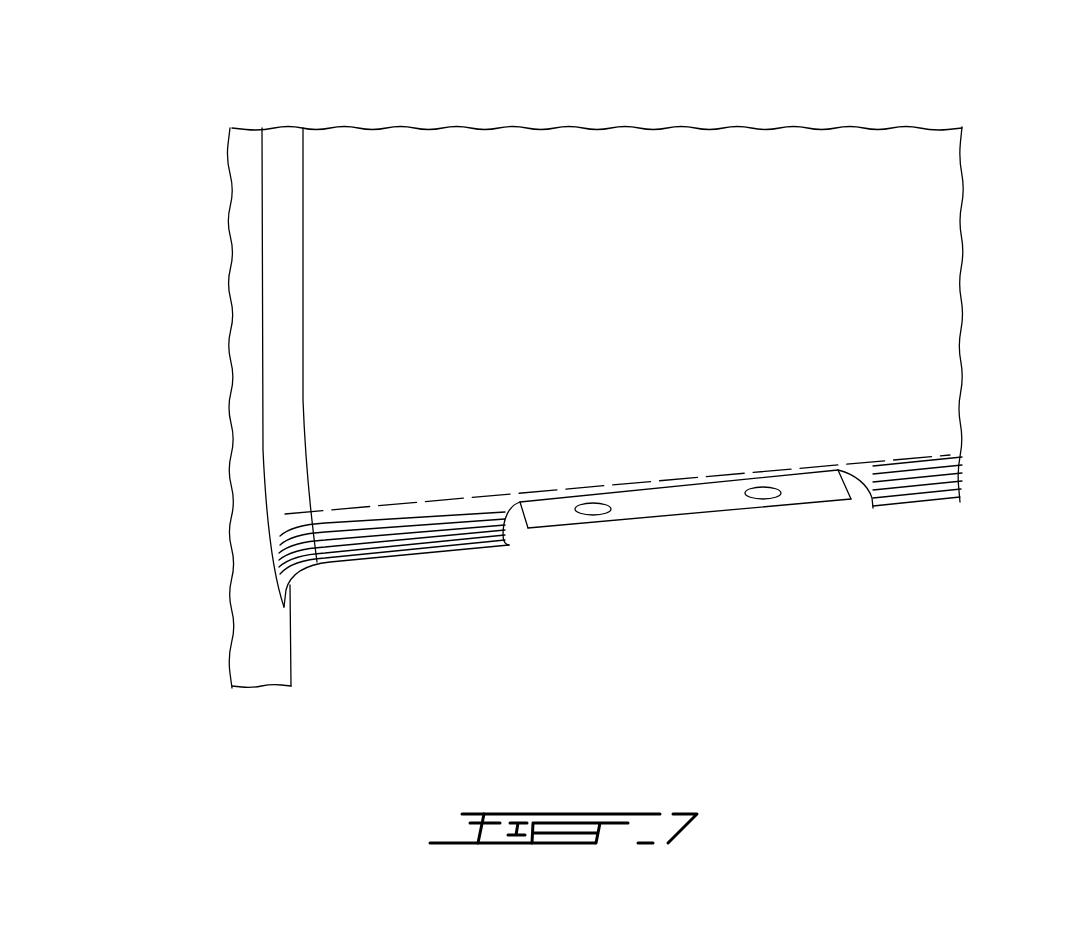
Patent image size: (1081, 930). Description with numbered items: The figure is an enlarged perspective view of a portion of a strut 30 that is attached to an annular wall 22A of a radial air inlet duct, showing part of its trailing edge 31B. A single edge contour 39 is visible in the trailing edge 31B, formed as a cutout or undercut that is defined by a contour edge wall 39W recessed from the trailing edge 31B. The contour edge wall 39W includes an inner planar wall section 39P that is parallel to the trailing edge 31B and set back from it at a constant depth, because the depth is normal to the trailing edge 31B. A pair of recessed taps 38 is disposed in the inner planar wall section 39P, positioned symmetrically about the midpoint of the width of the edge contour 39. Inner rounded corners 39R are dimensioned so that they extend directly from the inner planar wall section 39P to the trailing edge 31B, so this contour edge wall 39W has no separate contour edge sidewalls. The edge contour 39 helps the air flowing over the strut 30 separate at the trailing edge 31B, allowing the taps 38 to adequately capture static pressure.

The strut 30 is at (878, 184).
The annular wall 22A is at (258, 613).
The trailing edge 31B is at (405, 594).
The edge contour 39 is at (682, 560).
The inner planar wall section 39P is at (681, 500).
The tap 38 is at (594, 503).
The inner rounded corner 39R is at (853, 489).
The contour edge wall 39W is at (826, 462).